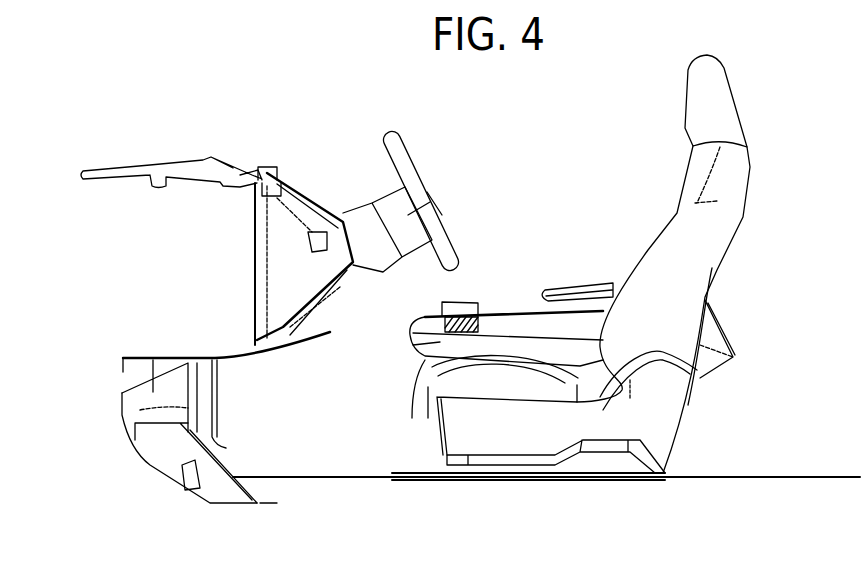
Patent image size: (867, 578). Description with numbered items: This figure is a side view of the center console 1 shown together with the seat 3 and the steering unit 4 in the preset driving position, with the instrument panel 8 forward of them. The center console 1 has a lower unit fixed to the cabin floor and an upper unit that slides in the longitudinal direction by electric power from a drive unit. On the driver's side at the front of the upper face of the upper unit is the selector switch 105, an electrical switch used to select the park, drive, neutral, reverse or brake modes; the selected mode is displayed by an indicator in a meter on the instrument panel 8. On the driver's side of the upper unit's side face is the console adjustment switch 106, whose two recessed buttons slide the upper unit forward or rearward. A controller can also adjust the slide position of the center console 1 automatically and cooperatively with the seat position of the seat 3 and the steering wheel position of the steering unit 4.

The center console 1 is at (573, 330).
The seat 3 is at (690, 275).
The steering unit 4 is at (433, 198).
The instrument panel 8 is at (283, 263).
The selector switch 105 is at (465, 301).
The console adjustment switch 106 is at (415, 348).